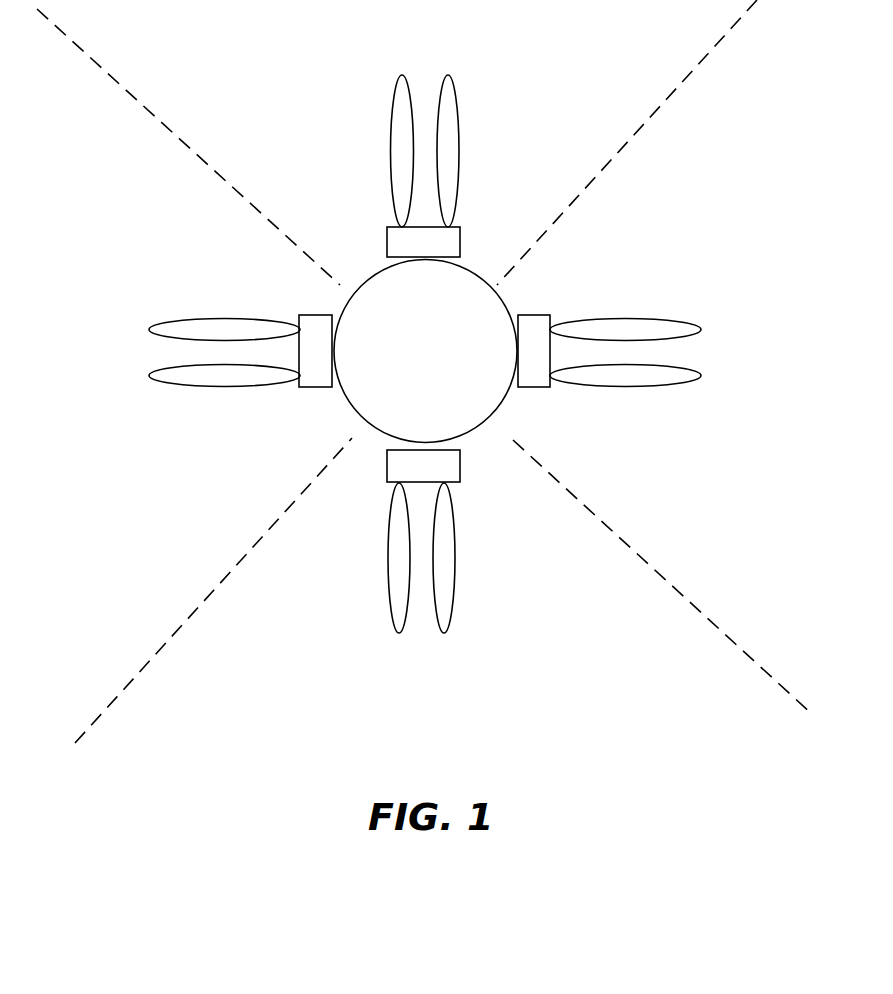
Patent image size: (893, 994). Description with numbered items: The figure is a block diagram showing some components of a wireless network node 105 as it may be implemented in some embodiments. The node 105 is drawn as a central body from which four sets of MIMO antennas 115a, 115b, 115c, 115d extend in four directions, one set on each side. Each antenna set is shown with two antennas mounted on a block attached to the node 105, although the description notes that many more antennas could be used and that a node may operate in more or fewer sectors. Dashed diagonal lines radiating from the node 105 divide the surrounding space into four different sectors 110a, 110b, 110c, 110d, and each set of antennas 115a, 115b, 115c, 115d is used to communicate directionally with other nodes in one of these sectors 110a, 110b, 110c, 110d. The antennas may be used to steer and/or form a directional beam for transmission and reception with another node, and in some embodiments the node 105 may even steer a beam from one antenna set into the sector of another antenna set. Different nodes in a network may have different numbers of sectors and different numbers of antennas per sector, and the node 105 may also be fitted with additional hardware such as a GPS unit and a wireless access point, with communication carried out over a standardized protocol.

The wireless network node 105 is at (445, 368).
The sector 110a is at (55, 193).
The sector 110b is at (579, 104).
The sector 110c is at (817, 262).
The sector 110d is at (310, 638).
The set of MIMO antennas 115a is at (200, 318).
The set of MIMO antennas 115b is at (402, 75).
The set of MIMO antennas 115c is at (673, 320).
The set of MIMO antennas 115d is at (456, 608).